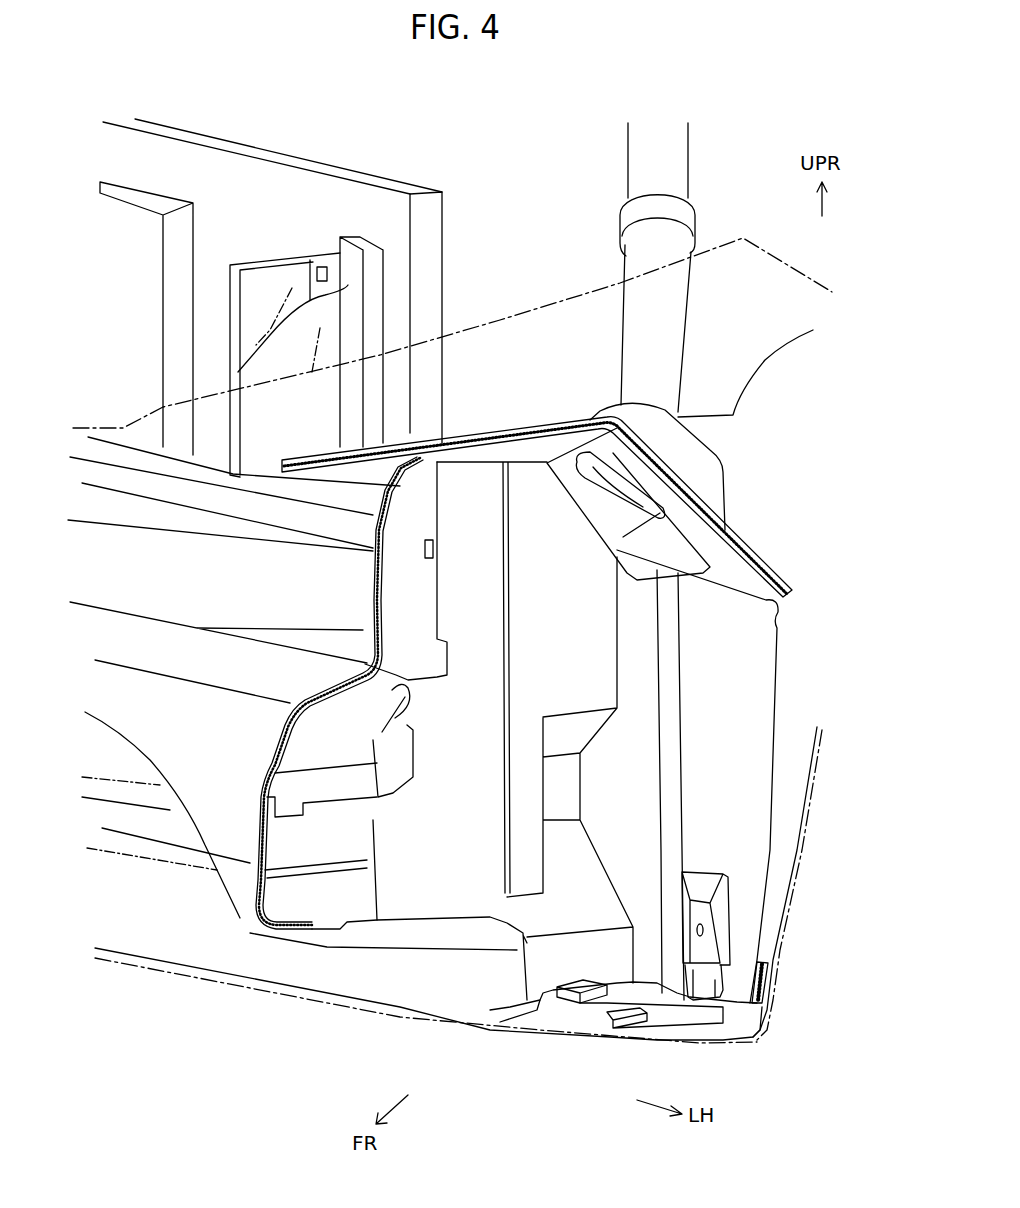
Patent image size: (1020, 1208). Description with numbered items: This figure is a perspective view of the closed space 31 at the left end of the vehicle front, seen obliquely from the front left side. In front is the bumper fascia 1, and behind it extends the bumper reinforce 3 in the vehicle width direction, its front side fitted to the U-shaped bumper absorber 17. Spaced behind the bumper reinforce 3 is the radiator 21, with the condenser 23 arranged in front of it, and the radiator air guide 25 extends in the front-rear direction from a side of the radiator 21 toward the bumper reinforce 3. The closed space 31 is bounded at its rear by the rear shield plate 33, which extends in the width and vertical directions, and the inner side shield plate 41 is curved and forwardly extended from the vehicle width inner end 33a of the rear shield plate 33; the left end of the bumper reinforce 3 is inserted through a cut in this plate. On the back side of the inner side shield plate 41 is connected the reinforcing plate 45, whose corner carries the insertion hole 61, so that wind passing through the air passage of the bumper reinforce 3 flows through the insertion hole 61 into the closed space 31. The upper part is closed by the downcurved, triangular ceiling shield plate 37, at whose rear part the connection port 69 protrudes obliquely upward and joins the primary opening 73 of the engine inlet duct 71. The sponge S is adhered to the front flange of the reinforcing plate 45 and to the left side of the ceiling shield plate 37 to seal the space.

The bumper fascia 1 is at (587, 300).
The bumper reinforce 3 is at (110, 473).
The bumper absorber 17 is at (123, 573).
The radiator 21 is at (222, 170).
The condenser 23 is at (155, 200).
The radiator air guide 25 is at (290, 287).
The closed space 31 is at (766, 763).
The rear shield plate 33 is at (762, 706).
The vehicle width inner end of the rear shield plate 33a is at (618, 662).
The ceiling shield plate 37 is at (720, 557).
The inner side shield plate 41 is at (437, 900).
The reinforcing plate 45 is at (367, 720).
The insertion hole 61 is at (434, 548).
The connection port 69 is at (710, 497).
The inlet duct 71 is at (682, 310).
The primary opening 73 is at (613, 490).
The sponge S is at (768, 560).